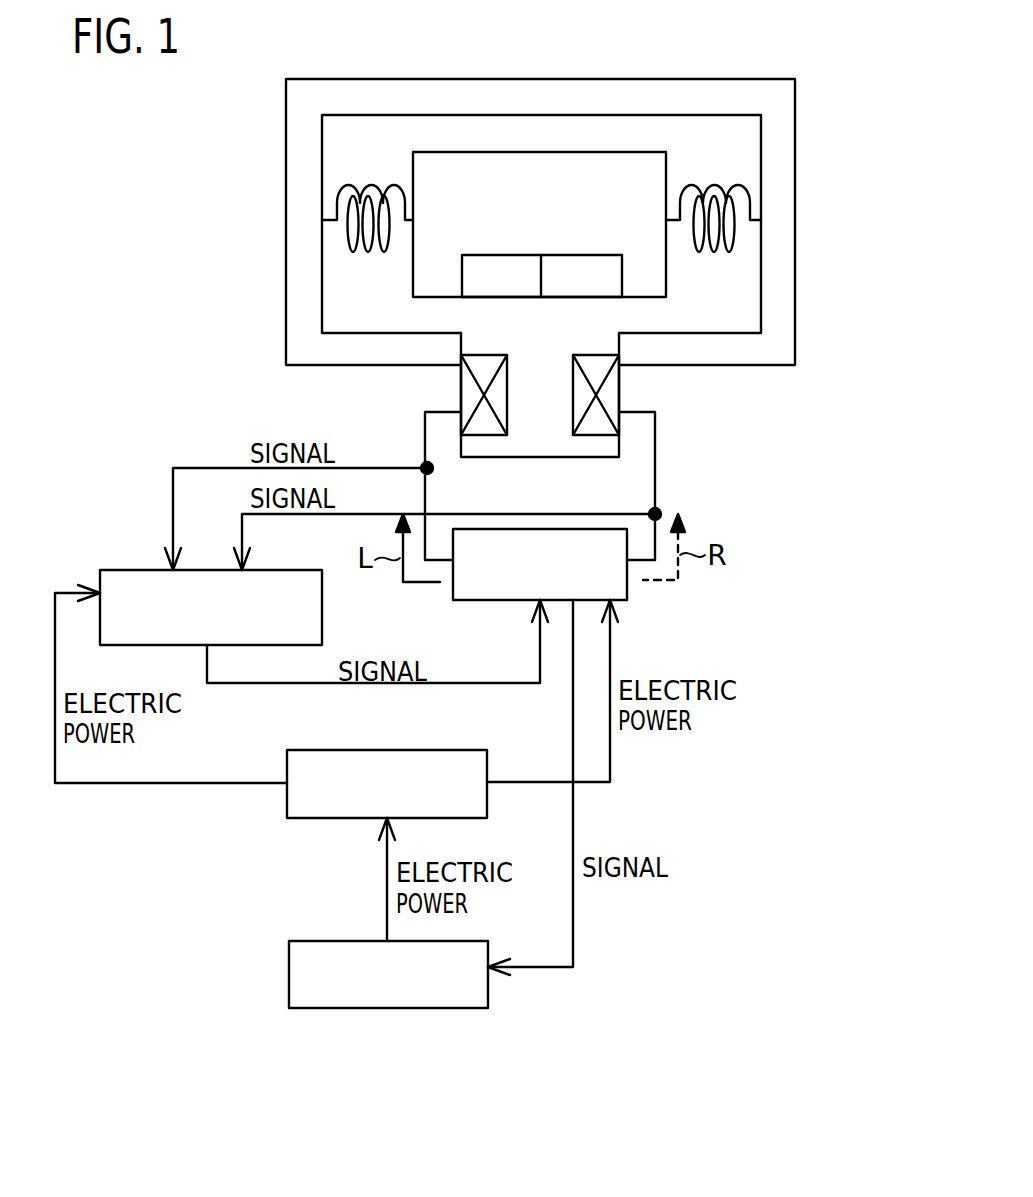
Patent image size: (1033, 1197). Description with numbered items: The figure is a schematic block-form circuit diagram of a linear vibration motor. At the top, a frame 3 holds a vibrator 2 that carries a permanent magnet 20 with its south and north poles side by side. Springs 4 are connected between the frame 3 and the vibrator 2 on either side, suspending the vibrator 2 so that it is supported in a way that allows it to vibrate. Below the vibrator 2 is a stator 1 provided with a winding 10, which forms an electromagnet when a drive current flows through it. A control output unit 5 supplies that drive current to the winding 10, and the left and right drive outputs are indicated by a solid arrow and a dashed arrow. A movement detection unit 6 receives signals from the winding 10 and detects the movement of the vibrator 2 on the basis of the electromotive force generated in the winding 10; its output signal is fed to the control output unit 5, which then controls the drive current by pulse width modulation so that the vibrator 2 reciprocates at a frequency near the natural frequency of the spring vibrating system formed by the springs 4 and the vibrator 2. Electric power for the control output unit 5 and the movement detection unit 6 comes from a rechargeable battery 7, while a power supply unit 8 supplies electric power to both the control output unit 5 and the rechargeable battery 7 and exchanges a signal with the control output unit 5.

The stator 1 is at (590, 447).
The vibrator 2 is at (539, 224).
The frame 3 is at (540, 222).
The springs 4 is at (541, 203).
The control output unit 5 is at (630, 590).
The movement detection unit 6 is at (148, 570).
The rechargeable battery 7 is at (415, 750).
The power supply unit 8 is at (423, 1008).
The winding 10 is at (613, 387).
The permanent magnet 20 is at (493, 254).